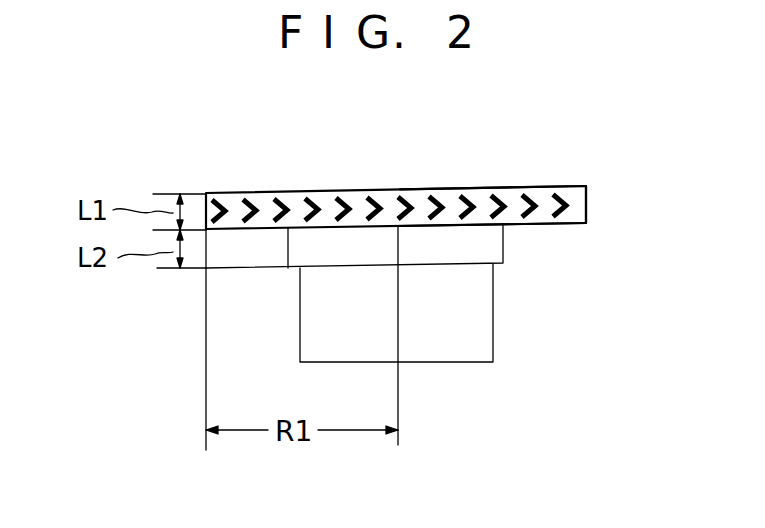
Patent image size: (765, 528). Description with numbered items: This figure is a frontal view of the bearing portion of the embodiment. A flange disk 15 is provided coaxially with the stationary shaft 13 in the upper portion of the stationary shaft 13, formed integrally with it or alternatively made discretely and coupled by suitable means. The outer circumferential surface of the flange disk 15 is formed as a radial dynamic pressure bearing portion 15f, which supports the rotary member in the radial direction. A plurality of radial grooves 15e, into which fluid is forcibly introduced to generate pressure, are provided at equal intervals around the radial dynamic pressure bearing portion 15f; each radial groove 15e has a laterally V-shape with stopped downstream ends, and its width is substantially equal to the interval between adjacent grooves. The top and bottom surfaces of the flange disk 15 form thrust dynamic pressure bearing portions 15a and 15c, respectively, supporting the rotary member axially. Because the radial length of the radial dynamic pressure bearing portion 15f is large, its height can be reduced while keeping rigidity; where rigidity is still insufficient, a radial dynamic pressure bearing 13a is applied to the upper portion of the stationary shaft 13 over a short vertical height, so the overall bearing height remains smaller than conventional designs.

The stationary shaft 13 is at (467, 348).
The radial dynamic pressure bearing 13a is at (483, 250).
The flange disk 15 is at (410, 188).
The thrust dynamic pressure bearing portion 15a is at (538, 183).
The thrust dynamic pressure bearing portion 15c is at (545, 232).
The radial grooves 15e is at (290, 198).
The radial dynamic pressure bearing portion 15f is at (587, 204).